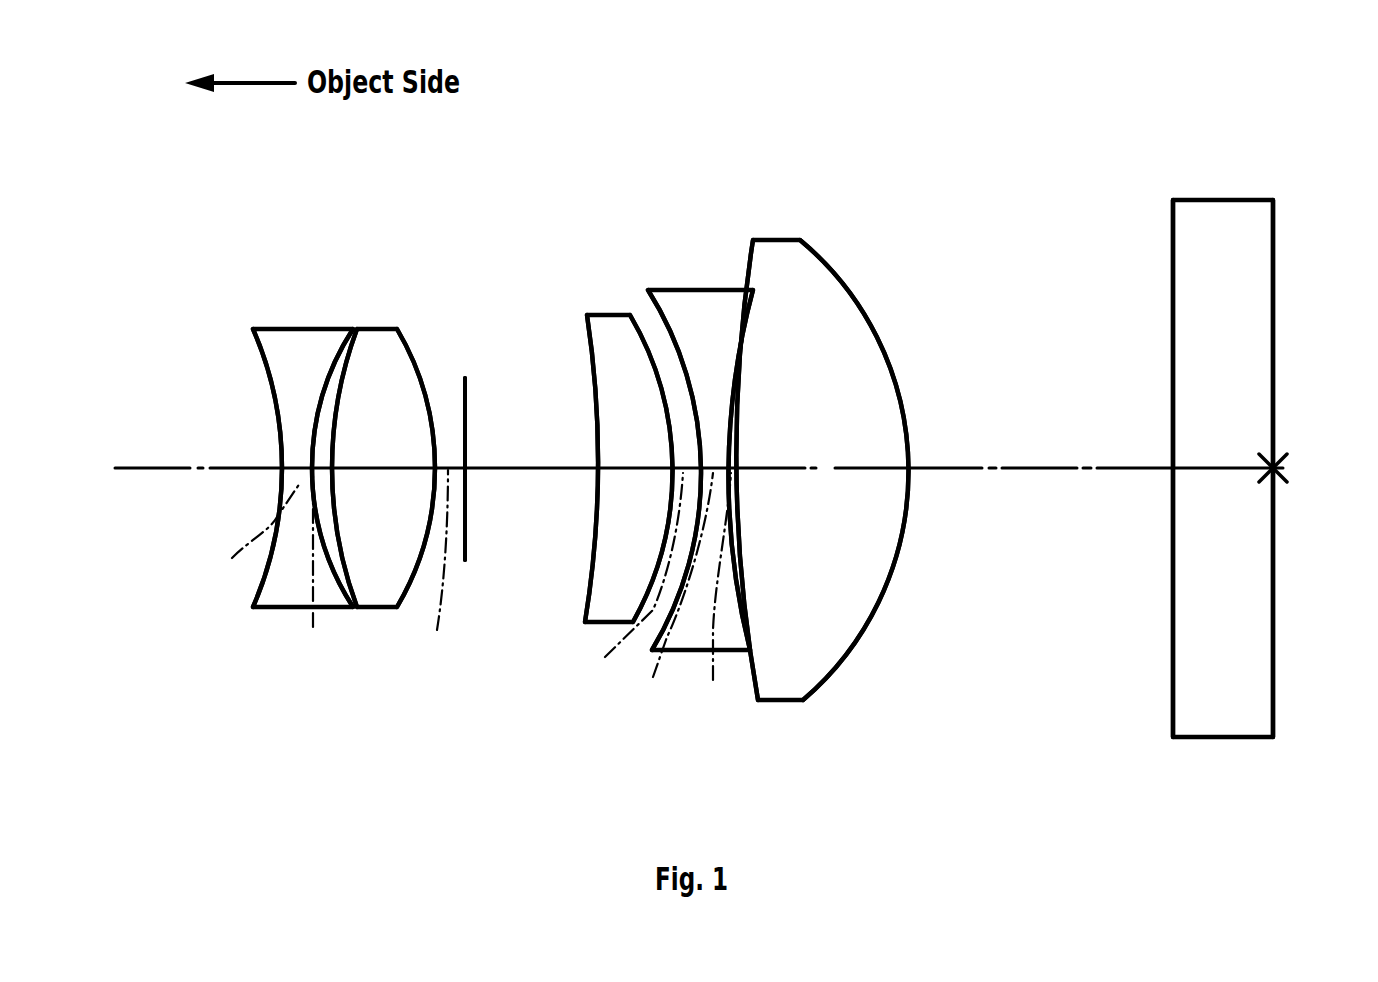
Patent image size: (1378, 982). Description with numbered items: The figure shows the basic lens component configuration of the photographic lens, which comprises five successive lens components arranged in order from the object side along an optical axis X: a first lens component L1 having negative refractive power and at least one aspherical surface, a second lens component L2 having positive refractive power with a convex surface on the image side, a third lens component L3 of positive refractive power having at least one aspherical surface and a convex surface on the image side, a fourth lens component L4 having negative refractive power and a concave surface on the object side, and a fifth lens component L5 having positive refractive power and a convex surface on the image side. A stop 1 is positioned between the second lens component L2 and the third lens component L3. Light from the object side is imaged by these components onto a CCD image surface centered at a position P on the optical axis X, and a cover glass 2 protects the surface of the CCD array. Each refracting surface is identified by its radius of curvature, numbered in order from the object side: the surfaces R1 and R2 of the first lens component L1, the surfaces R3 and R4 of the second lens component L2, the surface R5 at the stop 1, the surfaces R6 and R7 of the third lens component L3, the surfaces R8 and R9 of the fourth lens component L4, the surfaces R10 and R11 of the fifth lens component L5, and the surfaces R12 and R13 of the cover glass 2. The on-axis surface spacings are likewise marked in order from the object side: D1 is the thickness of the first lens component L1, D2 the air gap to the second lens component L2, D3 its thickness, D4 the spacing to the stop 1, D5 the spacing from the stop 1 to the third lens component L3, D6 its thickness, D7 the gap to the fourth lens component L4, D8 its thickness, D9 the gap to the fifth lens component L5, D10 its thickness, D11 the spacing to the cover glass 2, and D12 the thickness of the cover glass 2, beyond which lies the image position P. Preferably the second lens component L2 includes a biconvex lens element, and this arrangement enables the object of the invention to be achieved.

The first lens component L1 is at (278, 329).
The second lens component L2 is at (400, 329).
The third lens component L3 is at (598, 315).
The fourth lens component L4 is at (685, 290).
The fifth lens component L5 is at (797, 240).
The radius of curvature of first surface R1 is at (271, 380).
The radius of curvature of second surface R2 is at (324, 400).
The radius of curvature of third surface R3 is at (334, 430).
The radius of curvature of fourth surface R4 is at (427, 387).
The radius of curvature of fifth surface R5 is at (467, 420).
The radius of curvature of sixth surface R6 is at (594, 410).
The radius of curvature of seventh surface R7 is at (649, 350).
The radius of curvature of eighth surface R8 is at (680, 387).
The radius of curvature of ninth surface R9 is at (731, 440).
The radius of curvature of tenth surface R10 is at (740, 448).
The radius of curvature of eleventh surface R11 is at (866, 312).
The radius of curvature of twelfth surface R12 is at (1167, 235).
The radius of curvature of thirteenth surface R13 is at (1280, 232).
The on-axis surface spacing D1 is at (250, 535).
The on-axis surface spacing D2 is at (313, 573).
The on-axis surface spacing D3 is at (383, 489).
The on-axis surface spacing D4 is at (440, 573).
The on-axis surface spacing D5 is at (531, 491).
The on-axis surface spacing D6 is at (635, 491).
The on-axis surface spacing D7 is at (630, 582).
The on-axis surface spacing D8 is at (676, 593).
The on-axis surface spacing D9 is at (709, 594).
The on-axis surface spacing D10 is at (822, 492).
The on-axis surface spacing D11 is at (1040, 492).
The on-axis surface spacing D12 is at (1223, 491).
The stop 1 is at (467, 530).
The cover glass 2 is at (1218, 740).
The position P is at (1283, 466).
The optical axis X is at (157, 470).